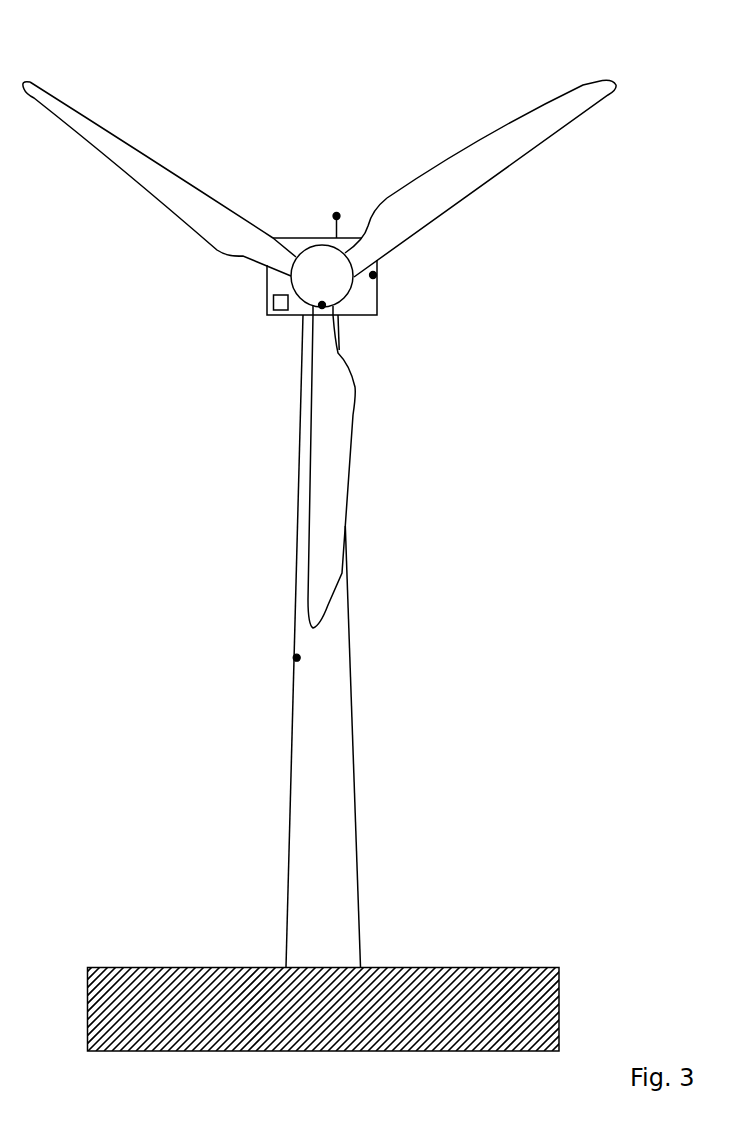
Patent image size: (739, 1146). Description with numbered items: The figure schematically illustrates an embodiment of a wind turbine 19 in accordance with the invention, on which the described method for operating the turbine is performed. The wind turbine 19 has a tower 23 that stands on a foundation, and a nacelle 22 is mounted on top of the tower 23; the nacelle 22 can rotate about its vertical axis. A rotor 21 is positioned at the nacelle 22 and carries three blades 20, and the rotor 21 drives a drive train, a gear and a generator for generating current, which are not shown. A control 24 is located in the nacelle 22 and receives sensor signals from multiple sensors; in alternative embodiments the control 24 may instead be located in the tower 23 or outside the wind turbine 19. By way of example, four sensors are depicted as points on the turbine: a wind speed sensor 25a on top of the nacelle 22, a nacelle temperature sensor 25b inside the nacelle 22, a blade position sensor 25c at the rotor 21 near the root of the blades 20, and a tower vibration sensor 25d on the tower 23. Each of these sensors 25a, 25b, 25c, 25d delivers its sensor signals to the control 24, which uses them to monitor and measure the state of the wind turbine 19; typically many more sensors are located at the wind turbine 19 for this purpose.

The wind turbine 19 is at (310, 110).
The blades 20 is at (43, 91).
The rotor 21 is at (310, 248).
The nacelle 22 is at (377, 293).
The tower 23 is at (352, 702).
The control 24 is at (273, 303).
The wind speed sensor 25a is at (336, 216).
The nacelle temperature sensor 25b is at (373, 275).
The blade position sensor 25c is at (322, 305).
The tower vibration sensor 25d is at (297, 658).